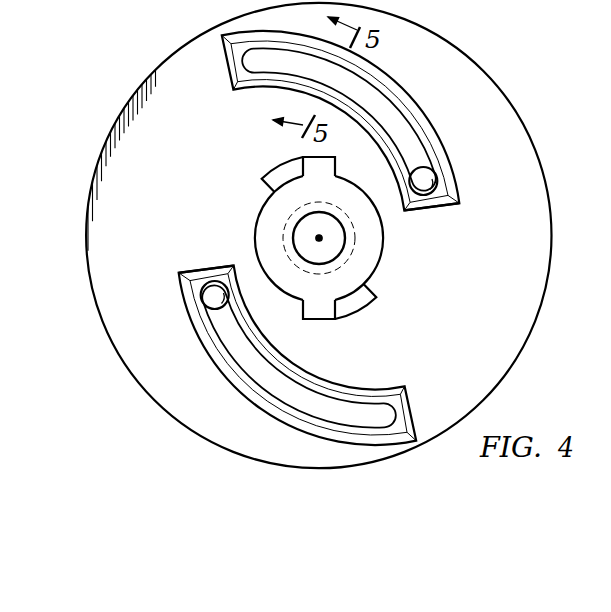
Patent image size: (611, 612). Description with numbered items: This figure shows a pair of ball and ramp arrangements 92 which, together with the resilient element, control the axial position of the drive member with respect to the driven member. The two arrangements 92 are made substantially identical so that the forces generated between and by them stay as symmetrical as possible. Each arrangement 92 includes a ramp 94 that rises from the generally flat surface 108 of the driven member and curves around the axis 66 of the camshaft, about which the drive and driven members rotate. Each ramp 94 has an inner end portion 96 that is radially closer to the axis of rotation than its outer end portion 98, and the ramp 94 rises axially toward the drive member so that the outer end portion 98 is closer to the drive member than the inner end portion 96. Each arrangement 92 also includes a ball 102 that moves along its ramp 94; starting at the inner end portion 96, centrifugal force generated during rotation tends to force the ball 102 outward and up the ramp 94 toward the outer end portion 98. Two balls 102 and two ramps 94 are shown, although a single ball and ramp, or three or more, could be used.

The axis of the camshaft 66 is at (318, 237).
The ball and ramp arrangement 92 is at (417, 82).
The ramp 94 is at (424, 117).
The inner end portion 96 is at (412, 155).
The outer end portion 98 is at (259, 55).
The ball 102 is at (413, 205).
The flat surface 108 is at (537, 185).